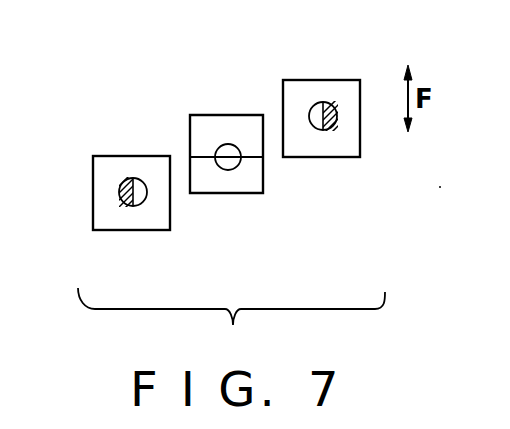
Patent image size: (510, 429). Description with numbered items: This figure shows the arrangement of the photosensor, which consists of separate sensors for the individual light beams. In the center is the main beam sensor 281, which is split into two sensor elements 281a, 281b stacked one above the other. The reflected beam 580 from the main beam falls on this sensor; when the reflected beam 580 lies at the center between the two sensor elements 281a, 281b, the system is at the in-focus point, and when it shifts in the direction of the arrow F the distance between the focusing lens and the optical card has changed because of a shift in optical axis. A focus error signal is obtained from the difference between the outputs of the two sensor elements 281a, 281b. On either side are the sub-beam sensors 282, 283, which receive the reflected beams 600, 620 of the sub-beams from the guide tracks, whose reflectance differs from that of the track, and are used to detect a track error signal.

The main beam sensor 281 is at (225, 157).
The sensor element 281a is at (232, 115).
The sensor element 281b is at (216, 193).
The sub-beam sensor 282 is at (103, 156).
The sub-beam sensor 283 is at (325, 80).
The reflected beam 580 is at (228, 158).
The reflected beam 600 is at (130, 206).
The reflected beam 620 is at (320, 130).